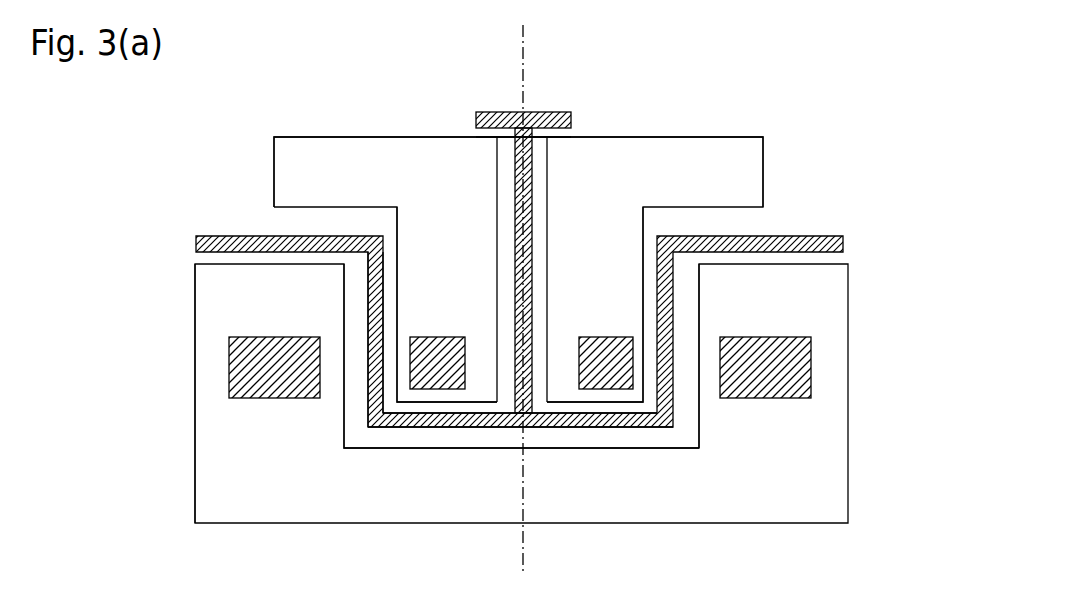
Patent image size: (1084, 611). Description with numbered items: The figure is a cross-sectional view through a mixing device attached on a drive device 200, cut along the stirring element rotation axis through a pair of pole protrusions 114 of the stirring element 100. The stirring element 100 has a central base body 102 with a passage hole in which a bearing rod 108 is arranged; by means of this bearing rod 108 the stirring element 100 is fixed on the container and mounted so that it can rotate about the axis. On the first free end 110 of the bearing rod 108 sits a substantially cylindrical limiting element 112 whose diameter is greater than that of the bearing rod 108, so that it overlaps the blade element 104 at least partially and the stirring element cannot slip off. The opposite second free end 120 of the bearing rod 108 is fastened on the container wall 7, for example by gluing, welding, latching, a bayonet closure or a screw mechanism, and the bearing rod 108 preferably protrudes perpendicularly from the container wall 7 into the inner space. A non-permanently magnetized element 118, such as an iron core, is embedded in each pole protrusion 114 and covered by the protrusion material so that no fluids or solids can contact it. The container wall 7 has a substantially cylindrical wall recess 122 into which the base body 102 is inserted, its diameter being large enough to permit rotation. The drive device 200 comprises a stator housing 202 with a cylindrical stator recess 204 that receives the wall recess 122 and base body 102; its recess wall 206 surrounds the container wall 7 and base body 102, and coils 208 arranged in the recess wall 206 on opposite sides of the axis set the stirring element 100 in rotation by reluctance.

The container wall 7 is at (805, 237).
The stirring element 100 is at (652, 153).
The base body 102 is at (418, 253).
The blade element 104 is at (313, 162).
The bearing rod 108 is at (503, 397).
The first free end 110 is at (508, 137).
The limiting element 112 is at (553, 118).
The pole protrusions 114 is at (418, 291).
The non-permanently magnetized element 118 is at (447, 383).
The second free end 120 is at (532, 410).
The wall recess 122 is at (393, 390).
The drive device 200 is at (785, 498).
The stator housing 202 is at (211, 498).
The stator recess 204 is at (697, 420).
The recess wall 206 is at (358, 415).
The coils 208 is at (260, 368).